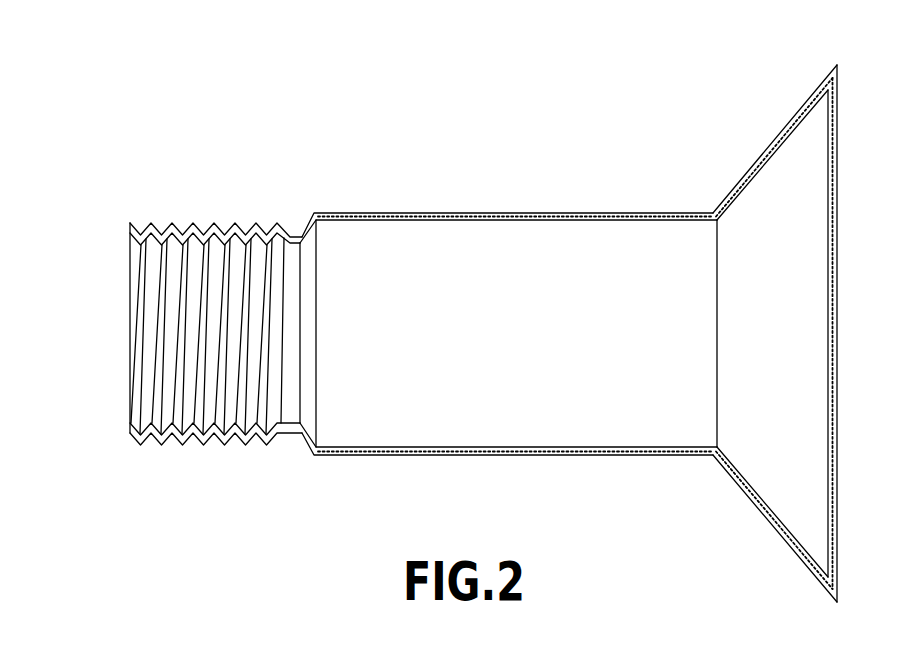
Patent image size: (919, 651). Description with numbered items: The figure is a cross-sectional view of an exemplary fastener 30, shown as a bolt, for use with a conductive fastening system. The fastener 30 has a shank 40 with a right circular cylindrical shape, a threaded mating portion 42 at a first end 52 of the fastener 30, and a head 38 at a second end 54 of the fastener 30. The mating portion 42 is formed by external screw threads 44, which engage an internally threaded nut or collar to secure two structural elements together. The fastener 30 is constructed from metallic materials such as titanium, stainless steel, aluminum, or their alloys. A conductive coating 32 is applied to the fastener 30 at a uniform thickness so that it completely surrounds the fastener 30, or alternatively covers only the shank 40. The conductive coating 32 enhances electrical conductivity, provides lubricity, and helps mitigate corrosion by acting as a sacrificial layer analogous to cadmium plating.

The fastener 30 is at (396, 82).
The conductive coating 32 is at (370, 213).
The shank 40 is at (507, 267).
The head 38 is at (783, 190).
The first end 52 is at (837, 165).
The threaded mating portion 42 is at (148, 297).
The external screw threads 44 is at (168, 415).
The second end 54 is at (130, 352).